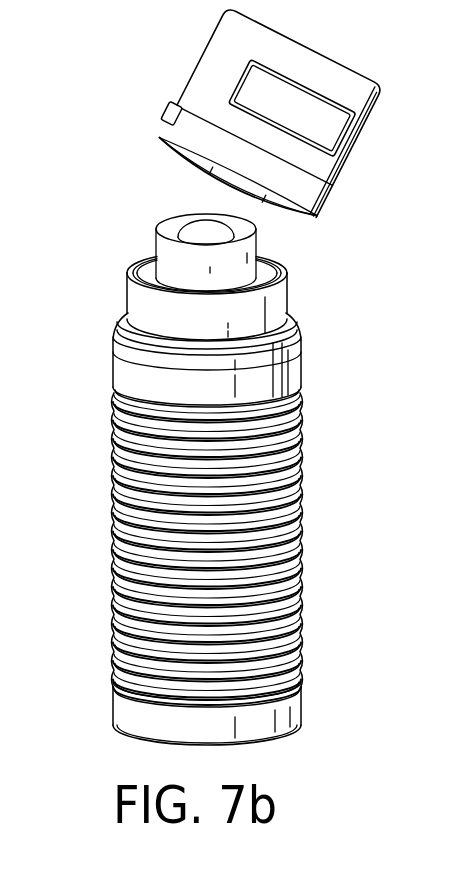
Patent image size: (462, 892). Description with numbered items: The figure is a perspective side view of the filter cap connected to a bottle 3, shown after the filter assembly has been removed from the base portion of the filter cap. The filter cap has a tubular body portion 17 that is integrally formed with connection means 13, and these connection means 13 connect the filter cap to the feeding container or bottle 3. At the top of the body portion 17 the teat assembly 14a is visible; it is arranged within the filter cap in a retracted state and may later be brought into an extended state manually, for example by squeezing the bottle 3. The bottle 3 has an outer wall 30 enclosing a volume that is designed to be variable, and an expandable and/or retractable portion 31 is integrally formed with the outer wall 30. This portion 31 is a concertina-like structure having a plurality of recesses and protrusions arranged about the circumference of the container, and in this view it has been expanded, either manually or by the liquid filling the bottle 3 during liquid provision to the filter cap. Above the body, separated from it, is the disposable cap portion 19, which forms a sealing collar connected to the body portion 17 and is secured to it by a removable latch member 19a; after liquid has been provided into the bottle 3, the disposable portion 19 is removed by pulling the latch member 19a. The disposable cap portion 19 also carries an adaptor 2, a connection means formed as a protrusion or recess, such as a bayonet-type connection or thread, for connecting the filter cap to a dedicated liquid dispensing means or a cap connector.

The disposable cap portion 19 is at (383, 89).
The latch member 19a is at (163, 112).
The adaptor 2 is at (330, 137).
The teat assembly 14a is at (247, 262).
The tubular body portion 17 is at (287, 288).
The connection means 13 is at (122, 327).
The outer wall 30 is at (287, 375).
The expandable and/or retractable portion 31 is at (300, 528).
The bottle 3 is at (300, 700).